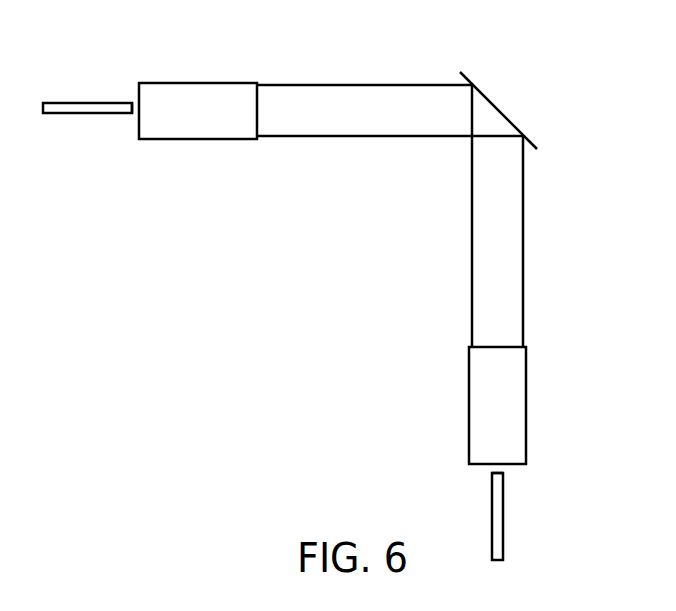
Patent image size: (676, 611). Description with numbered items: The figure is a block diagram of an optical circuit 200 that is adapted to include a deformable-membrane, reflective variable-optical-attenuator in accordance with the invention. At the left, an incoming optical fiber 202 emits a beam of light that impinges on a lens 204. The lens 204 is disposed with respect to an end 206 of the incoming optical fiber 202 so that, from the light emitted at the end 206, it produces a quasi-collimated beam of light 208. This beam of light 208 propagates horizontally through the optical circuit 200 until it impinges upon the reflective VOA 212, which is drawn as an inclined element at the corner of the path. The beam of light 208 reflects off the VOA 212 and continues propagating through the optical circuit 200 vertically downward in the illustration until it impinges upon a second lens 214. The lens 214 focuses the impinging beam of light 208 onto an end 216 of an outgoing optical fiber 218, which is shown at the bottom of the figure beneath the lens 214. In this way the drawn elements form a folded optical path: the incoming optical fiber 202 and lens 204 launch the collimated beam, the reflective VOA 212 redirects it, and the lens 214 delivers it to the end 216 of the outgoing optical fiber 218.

The optical circuit 200 is at (341, 227).
The incoming optical fiber 202 is at (97, 115).
The lens 204 is at (198, 83).
The end 206 is at (135, 102).
The beam of light 208 is at (328, 84).
The reflective VOA 212 is at (500, 110).
The lens 214 is at (530, 390).
The end 216 is at (490, 472).
The outgoing optical fiber 218 is at (500, 540).